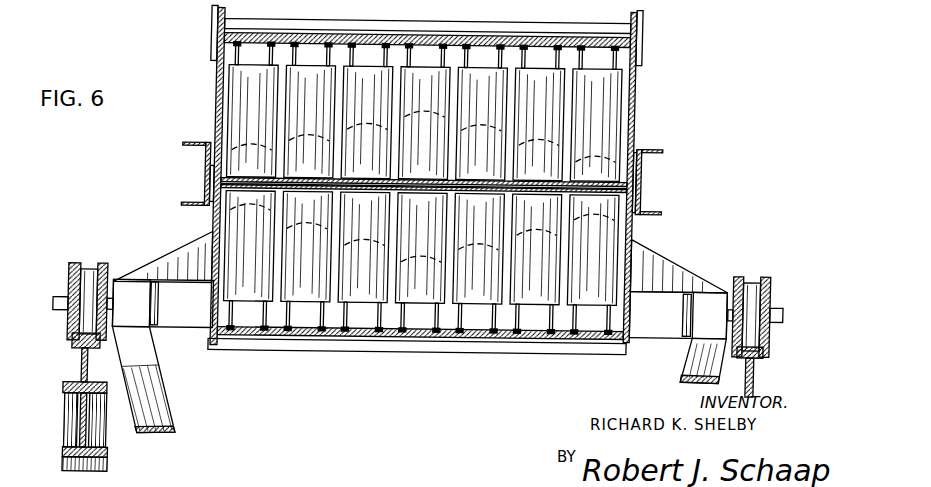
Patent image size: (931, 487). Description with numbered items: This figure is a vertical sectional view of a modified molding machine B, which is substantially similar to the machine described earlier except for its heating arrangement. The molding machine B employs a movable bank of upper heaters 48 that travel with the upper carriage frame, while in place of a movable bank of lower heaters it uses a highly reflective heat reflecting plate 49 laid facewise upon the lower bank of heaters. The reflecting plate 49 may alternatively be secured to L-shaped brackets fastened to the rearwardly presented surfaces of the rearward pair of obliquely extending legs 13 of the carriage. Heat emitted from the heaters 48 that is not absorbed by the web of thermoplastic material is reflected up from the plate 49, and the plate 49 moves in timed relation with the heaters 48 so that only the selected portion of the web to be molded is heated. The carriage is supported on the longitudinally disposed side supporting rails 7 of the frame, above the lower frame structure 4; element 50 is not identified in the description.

The modified molding machine B is at (646, 106).
The upper heaters 48 is at (602, 152).
The heat reflecting plate 49 is at (633, 206).
The support gusset plate 50 is at (211, 204).
The obliquely extending legs 13 is at (160, 352).
The side supporting rails 7 is at (82, 365).
The lower frame structure 4 is at (66, 420).